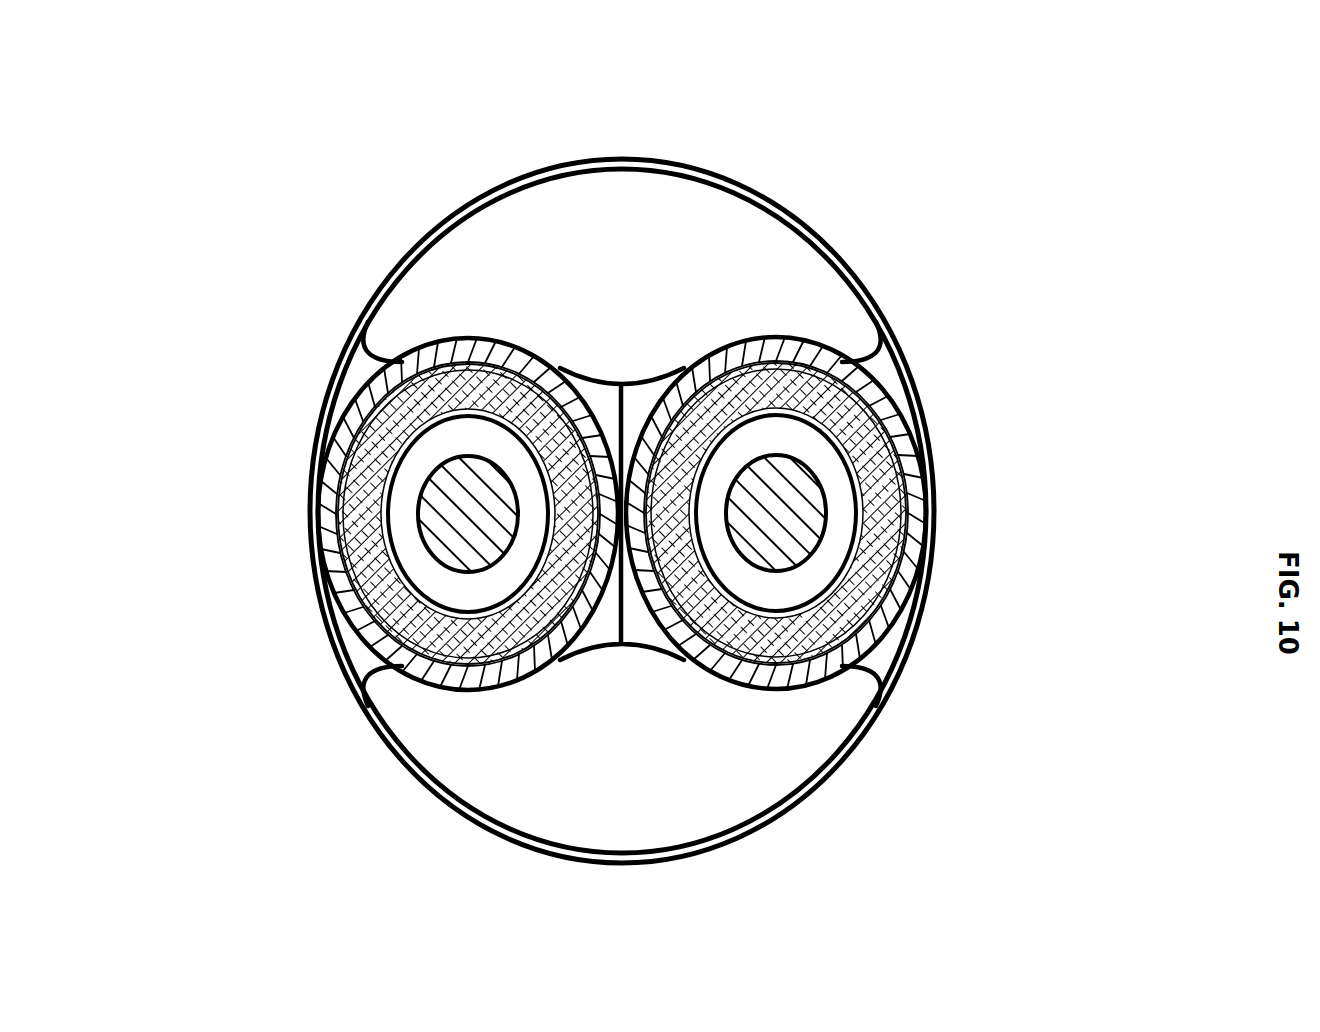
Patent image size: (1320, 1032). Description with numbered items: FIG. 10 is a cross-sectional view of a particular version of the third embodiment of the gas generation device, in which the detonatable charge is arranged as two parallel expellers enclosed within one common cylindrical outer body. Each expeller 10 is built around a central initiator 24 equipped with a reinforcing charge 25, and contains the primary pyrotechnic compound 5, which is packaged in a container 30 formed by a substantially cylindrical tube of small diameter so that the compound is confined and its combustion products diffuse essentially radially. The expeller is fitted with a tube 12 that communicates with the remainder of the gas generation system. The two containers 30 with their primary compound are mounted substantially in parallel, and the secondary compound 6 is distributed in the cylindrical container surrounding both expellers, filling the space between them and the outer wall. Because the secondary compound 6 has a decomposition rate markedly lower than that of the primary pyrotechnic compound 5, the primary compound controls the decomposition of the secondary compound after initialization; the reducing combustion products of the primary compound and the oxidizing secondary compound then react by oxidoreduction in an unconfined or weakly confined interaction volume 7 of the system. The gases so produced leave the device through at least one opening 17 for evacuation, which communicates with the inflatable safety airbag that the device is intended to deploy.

The expeller 10 is at (459, 123).
The tube 12 is at (465, 347).
The secondary compound 6 is at (760, 262).
The primary pyrotechnic compound 5 is at (878, 352).
The reinforcing charge 25 is at (430, 450).
The initiator 24 is at (443, 548).
The interaction volume 7 is at (355, 652).
The container 30 is at (877, 630).
The opening 17 is at (785, 825).